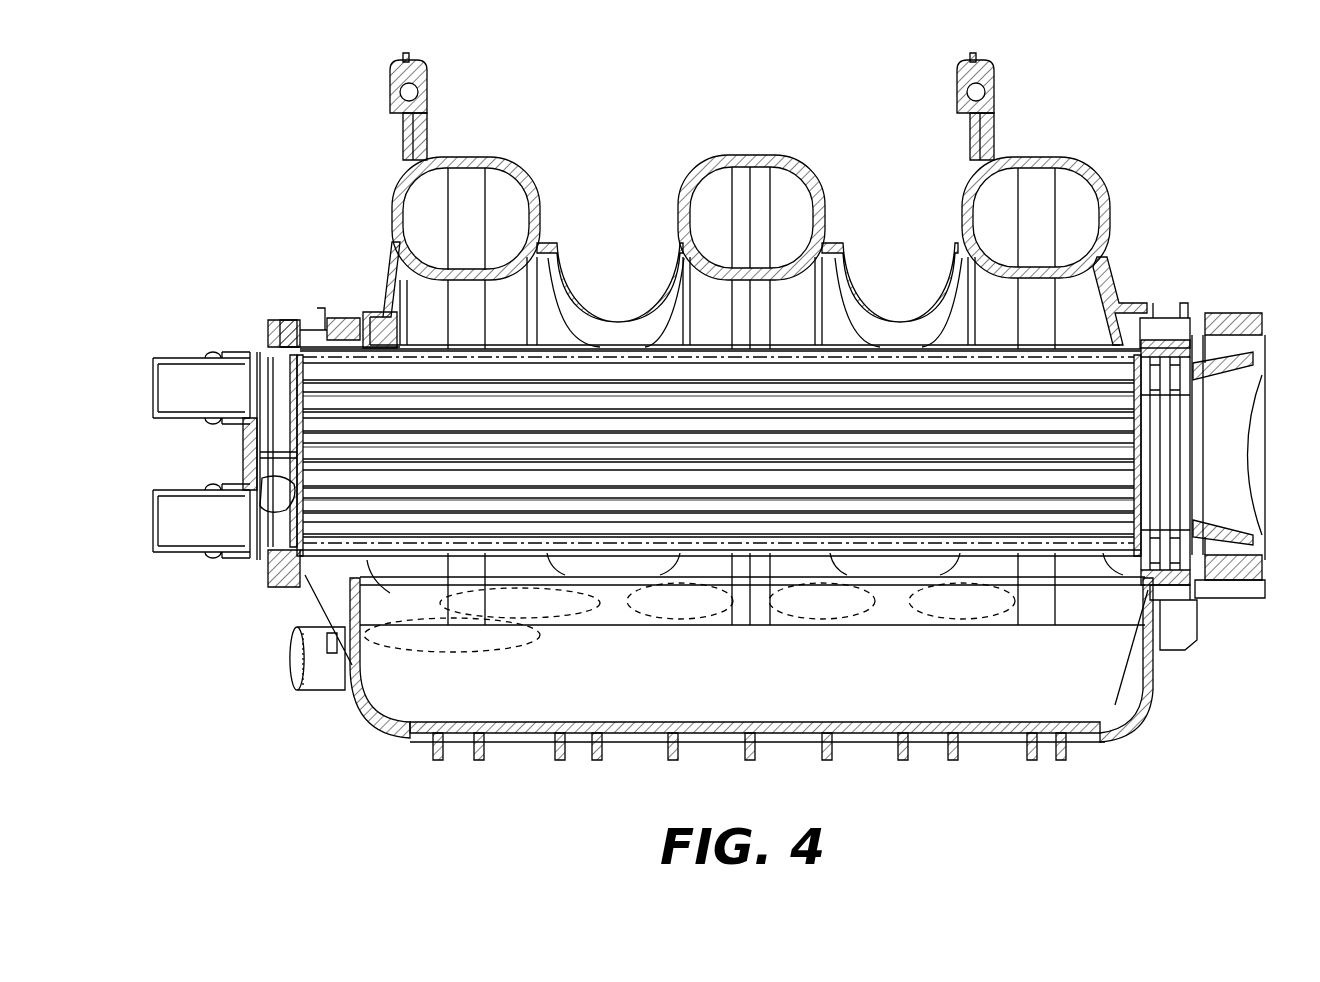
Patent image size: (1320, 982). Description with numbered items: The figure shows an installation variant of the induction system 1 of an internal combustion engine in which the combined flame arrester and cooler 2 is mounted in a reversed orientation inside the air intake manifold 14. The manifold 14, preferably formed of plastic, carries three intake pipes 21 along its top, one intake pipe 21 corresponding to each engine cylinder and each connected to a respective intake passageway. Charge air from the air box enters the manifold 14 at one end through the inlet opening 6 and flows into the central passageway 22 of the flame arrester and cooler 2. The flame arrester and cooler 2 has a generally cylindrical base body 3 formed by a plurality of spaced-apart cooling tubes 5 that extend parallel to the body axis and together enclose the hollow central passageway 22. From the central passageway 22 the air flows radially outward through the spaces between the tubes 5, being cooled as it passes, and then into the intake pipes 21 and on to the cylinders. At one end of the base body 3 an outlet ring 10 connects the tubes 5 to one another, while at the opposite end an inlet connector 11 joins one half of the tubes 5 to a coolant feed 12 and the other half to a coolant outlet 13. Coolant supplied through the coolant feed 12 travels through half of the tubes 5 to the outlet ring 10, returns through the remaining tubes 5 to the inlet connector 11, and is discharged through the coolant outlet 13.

The induction system 1 is at (325, 222).
The combined flame arrester and cooler 2 is at (610, 382).
The base body 3 is at (300, 565).
The cooling tubes 5 is at (900, 420).
The inlet opening 6 is at (1235, 407).
The outlet ring 10 is at (1178, 330).
The inlet connector 11 is at (240, 556).
The coolant feed 12 is at (178, 380).
The coolant outlet 13 is at (178, 525).
The air intake manifold 14 is at (352, 667).
The intake pipe 21 is at (502, 188).
The central passageway 22 is at (978, 495).